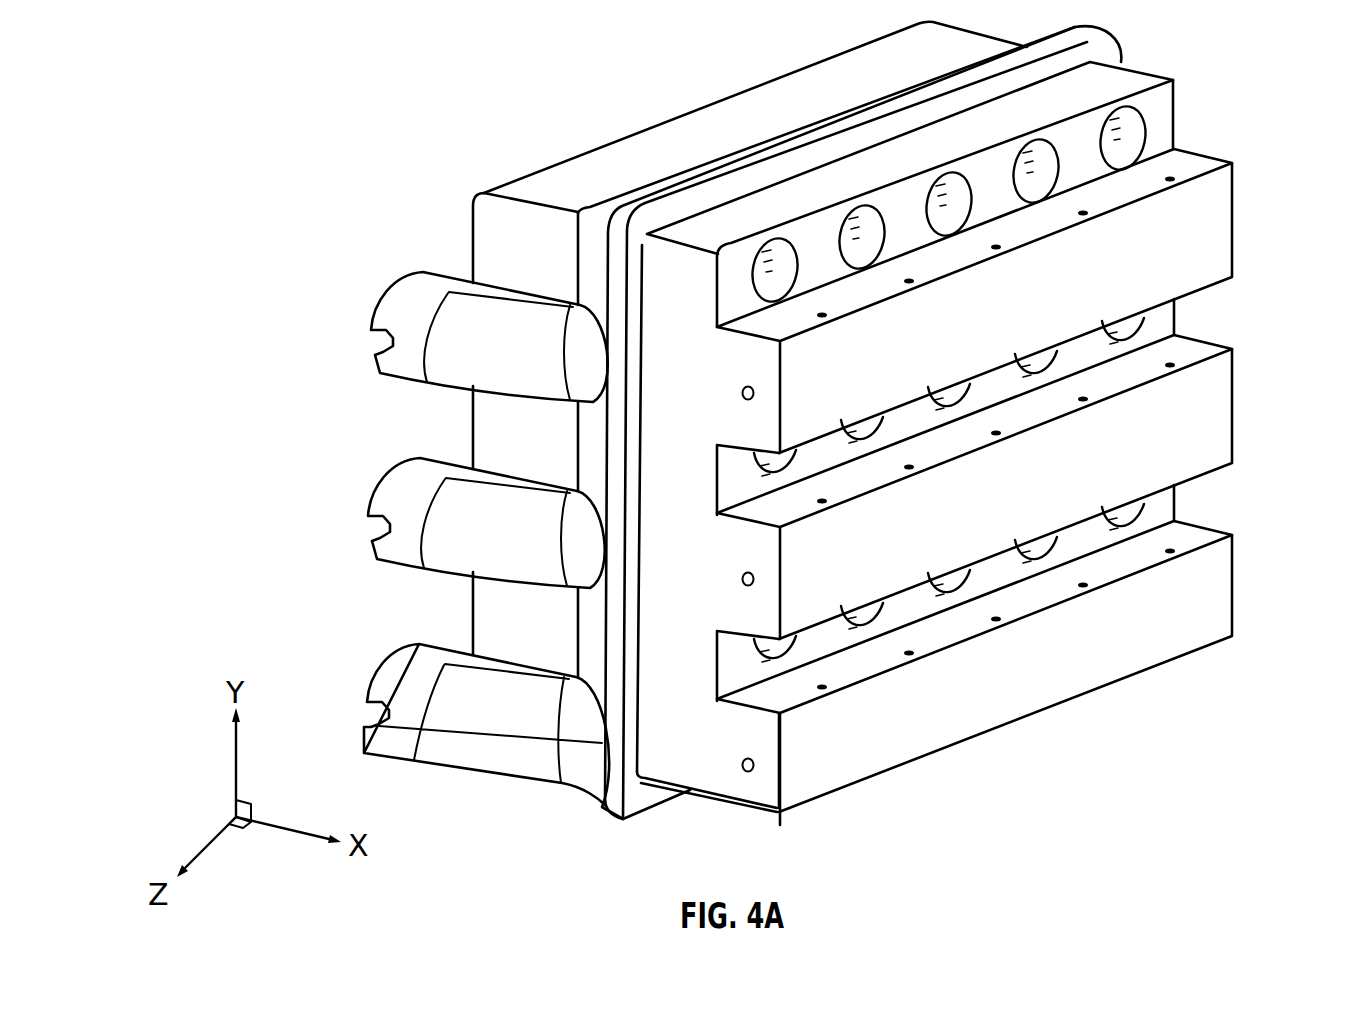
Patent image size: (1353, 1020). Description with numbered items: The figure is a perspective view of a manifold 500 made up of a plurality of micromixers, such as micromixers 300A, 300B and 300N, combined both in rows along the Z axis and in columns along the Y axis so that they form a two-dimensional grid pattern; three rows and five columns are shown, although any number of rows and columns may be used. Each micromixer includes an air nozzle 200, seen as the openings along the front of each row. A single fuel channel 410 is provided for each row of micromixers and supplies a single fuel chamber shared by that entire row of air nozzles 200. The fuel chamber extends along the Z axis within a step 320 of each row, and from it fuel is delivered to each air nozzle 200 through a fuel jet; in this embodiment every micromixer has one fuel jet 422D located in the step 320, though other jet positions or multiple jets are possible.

The manifold 500 is at (270, 70).
The fuel channel 410 is at (450, 318).
The micromixer 300A is at (732, 229).
The micromixer 300B is at (837, 178).
The micromixer 300N is at (1154, 513).
The air nozzle 200 is at (780, 270).
The step 320 is at (1213, 218).
The fuel jet 422D is at (822, 316).